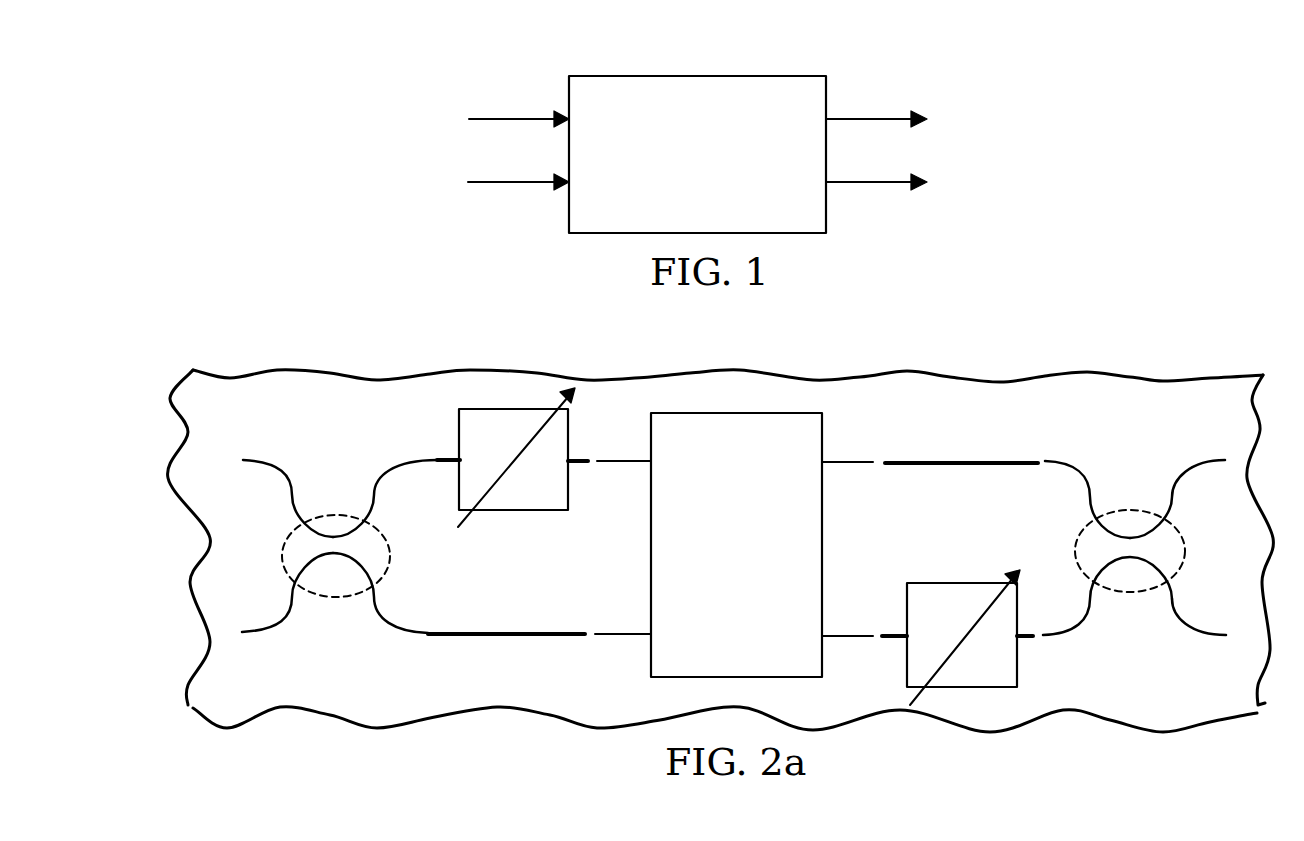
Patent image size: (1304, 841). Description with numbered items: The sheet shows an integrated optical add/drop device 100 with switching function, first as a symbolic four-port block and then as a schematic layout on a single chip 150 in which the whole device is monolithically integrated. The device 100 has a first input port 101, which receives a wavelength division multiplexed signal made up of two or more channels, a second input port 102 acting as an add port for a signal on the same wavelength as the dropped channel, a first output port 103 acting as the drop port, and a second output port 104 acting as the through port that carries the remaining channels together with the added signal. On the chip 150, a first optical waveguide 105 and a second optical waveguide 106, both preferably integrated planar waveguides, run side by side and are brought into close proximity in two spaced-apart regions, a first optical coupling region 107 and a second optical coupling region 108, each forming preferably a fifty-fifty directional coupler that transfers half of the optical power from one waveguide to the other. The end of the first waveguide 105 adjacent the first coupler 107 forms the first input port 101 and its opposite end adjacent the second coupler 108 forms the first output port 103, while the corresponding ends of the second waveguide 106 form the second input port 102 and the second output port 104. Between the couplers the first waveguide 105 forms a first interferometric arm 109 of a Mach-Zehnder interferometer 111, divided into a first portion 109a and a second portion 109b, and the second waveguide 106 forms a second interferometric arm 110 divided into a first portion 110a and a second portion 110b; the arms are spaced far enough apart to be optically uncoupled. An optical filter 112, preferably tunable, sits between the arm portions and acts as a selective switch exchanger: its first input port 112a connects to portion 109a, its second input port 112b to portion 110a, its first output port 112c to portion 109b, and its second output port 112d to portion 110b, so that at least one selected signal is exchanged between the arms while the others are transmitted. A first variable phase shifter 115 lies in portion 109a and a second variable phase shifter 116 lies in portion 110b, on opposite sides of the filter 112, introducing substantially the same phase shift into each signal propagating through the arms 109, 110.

In FIG. 1, the integrated optical add/drop device 100 is at (717, 95).
In FIG. 2a, the integrated optical add/drop device 100 is at (1168, 326).
In FIG. 1, the first input port 101 is at (510, 118).
In FIG. 2a, the first input port 101 is at (253, 462).
In FIG. 1, the second input port 102 is at (518, 183).
In FIG. 2a, the second input port 102 is at (263, 630).
In FIG. 1, the first output port 103 is at (875, 118).
In FIG. 2a, the first output port 103 is at (1223, 458).
In FIG. 1, the second output port 104 is at (898, 183).
In FIG. 2a, the second output port 104 is at (1215, 630).
In FIG. 2a, the first optical waveguide 105 is at (293, 505).
In FIG. 2a, the second optical waveguide 106 is at (1085, 620).
In FIG. 2a, the first optical coupling region 107 is at (340, 578).
In FIG. 2a, the second optical coupling region 108 is at (1137, 582).
In FIG. 2a, the first interferometric arm 109 is at (902, 428).
In FIG. 2a, the first portion of the first interferometric arm 109a is at (438, 458).
In FIG. 2a, the second portion of the first interferometric arm 109b is at (988, 468).
In FIG. 2a, the second interferometric arm 110 is at (478, 620).
In FIG. 2a, the first portion of the second interferometric arm 110a is at (497, 640).
In FIG. 2a, the second portion of the second interferometric arm 110b is at (890, 630).
In FIG. 2a, the Mach-Zehnder Interferometer 111 is at (995, 412).
In FIG. 2a, the optical filter 112 is at (715, 432).
In FIG. 2a, the first input port of the optical filter 112a is at (604, 458).
In FIG. 2a, the second input port of the optical filter 112b is at (618, 637).
In FIG. 2a, the first output port of the optical filter 112c is at (870, 462).
In FIG. 2a, the second output port of the optical filter 112d is at (865, 637).
In FIG. 2a, the first variable phase shifter 115 is at (487, 433).
In FIG. 2a, the second variable phase shifter 116 is at (997, 667).
In FIG. 2a, the chip 150 is at (305, 693).